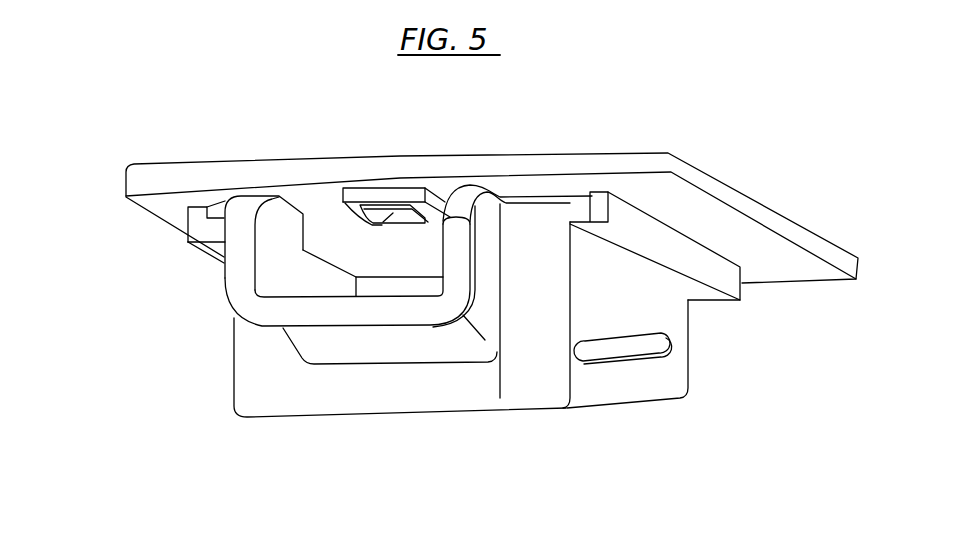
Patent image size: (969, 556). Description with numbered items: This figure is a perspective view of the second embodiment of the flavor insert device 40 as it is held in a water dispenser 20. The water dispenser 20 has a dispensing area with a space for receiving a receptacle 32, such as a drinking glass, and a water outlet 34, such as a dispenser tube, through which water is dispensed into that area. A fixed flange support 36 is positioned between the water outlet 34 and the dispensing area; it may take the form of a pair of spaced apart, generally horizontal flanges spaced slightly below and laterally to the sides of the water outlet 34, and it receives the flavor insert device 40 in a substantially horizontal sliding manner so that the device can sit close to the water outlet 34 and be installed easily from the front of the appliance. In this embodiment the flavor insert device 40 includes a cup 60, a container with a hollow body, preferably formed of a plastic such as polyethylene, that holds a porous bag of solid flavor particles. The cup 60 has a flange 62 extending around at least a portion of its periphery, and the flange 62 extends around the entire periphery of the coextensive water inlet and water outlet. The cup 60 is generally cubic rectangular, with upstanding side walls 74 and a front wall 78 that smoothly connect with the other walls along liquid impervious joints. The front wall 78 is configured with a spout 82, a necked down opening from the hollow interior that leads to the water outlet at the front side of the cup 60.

The water dispenser 20 is at (151, 212).
The receptacle 32 is at (410, 414).
The water outlet 34 is at (350, 192).
The fixed flange support 36 is at (192, 230).
The flavor insert device 40 is at (493, 312).
The cup 60 is at (670, 403).
The flange 62 is at (543, 196).
The side walls 74 is at (680, 323).
The front wall 78 is at (300, 400).
The spout 82 is at (314, 296).